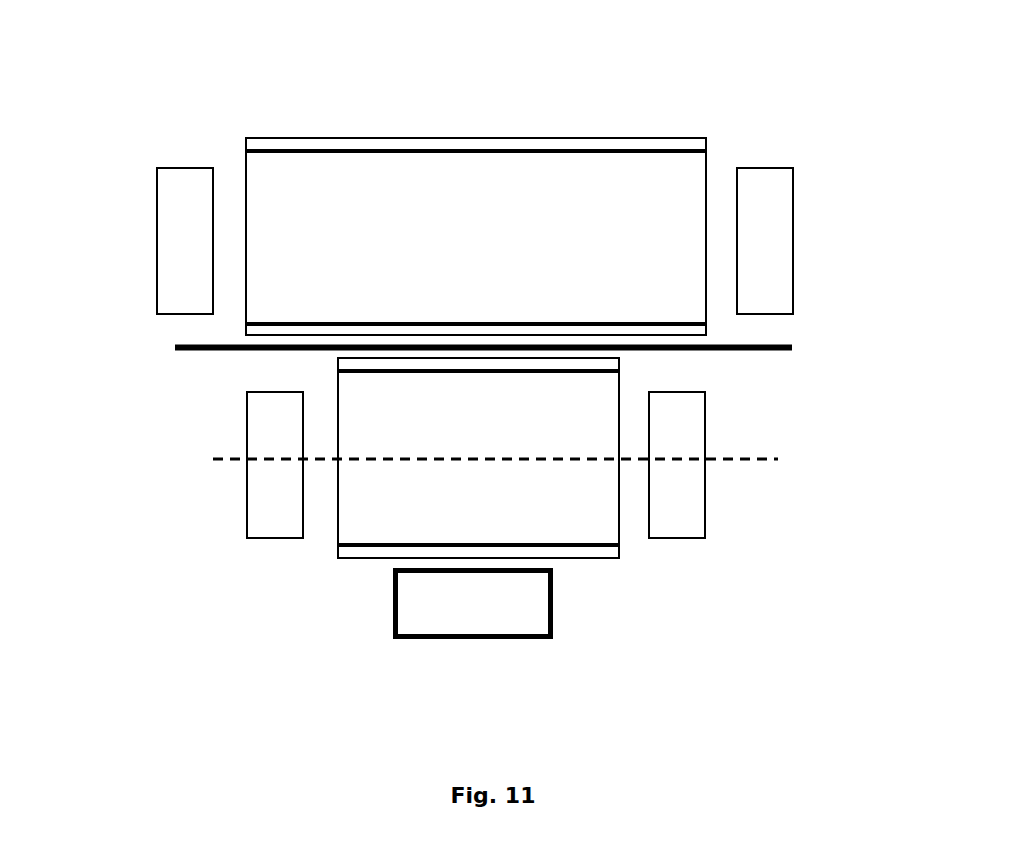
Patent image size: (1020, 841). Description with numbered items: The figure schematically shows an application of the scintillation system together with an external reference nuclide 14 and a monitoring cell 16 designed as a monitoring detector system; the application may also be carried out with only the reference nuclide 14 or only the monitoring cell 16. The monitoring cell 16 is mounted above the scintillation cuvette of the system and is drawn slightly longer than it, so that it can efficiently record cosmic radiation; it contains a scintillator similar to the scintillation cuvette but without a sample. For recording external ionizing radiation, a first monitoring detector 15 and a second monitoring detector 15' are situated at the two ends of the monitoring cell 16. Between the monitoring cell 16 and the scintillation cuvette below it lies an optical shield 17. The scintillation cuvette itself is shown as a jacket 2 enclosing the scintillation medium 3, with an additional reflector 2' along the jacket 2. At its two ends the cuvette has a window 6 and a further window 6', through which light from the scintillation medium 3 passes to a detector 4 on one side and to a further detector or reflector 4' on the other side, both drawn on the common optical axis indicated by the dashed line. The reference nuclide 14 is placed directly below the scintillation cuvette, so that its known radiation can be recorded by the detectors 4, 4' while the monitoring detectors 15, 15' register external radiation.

The monitoring cell 16 is at (636, 122).
The first monitoring detector 15 is at (138, 241).
The second monitoring detector 15' is at (823, 241).
The optical shield 17 is at (180, 346).
The scintillation medium 3 is at (394, 508).
The jacket 2 is at (482, 596).
The additional reflector 2' is at (478, 607).
The window 6 is at (289, 479).
The window 6' is at (643, 486).
The detector 4 is at (235, 465).
The further detector or reflector 4' is at (721, 465).
The reference nuclide 14 is at (473, 643).